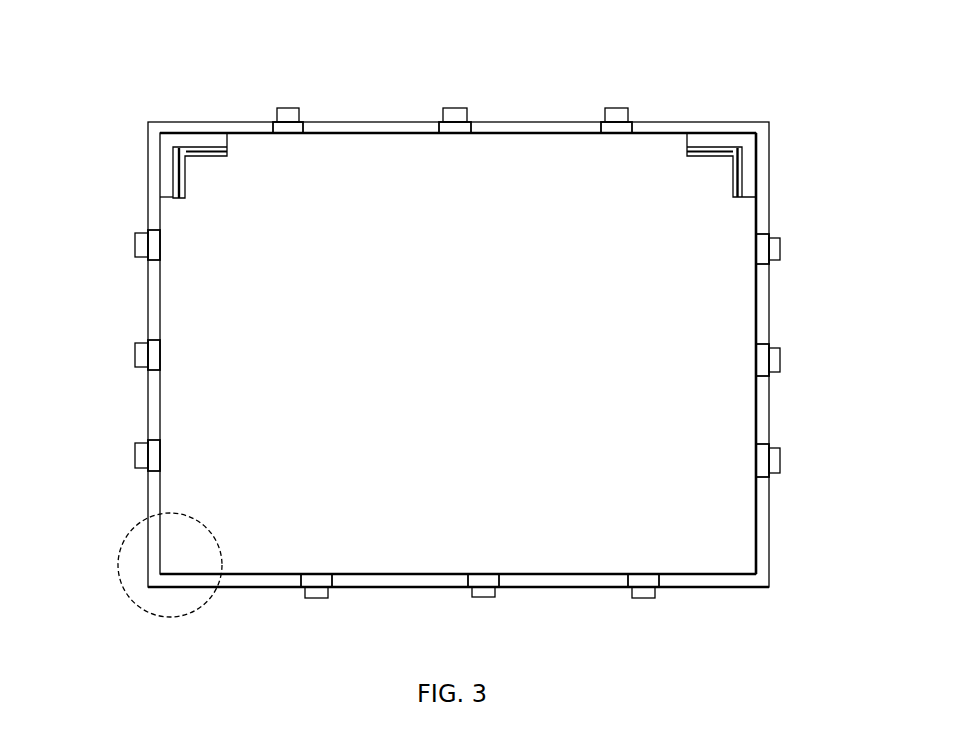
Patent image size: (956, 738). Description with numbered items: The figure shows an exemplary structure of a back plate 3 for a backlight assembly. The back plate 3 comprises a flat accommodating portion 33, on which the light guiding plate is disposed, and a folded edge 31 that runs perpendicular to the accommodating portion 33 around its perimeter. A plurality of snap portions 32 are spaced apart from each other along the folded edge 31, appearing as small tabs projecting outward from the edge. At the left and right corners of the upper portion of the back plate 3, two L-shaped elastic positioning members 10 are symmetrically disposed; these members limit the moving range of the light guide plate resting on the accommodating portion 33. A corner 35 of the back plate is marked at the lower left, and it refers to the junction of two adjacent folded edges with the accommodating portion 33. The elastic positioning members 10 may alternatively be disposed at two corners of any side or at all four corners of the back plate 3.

The back plate 3 is at (772, 310).
The L-shaped elastic positioning member 10 is at (170, 136).
The folded edge 31 is at (152, 330).
The snap portion 32 is at (140, 455).
The accommodating portion 33 is at (608, 490).
The corner 35 is at (127, 587).